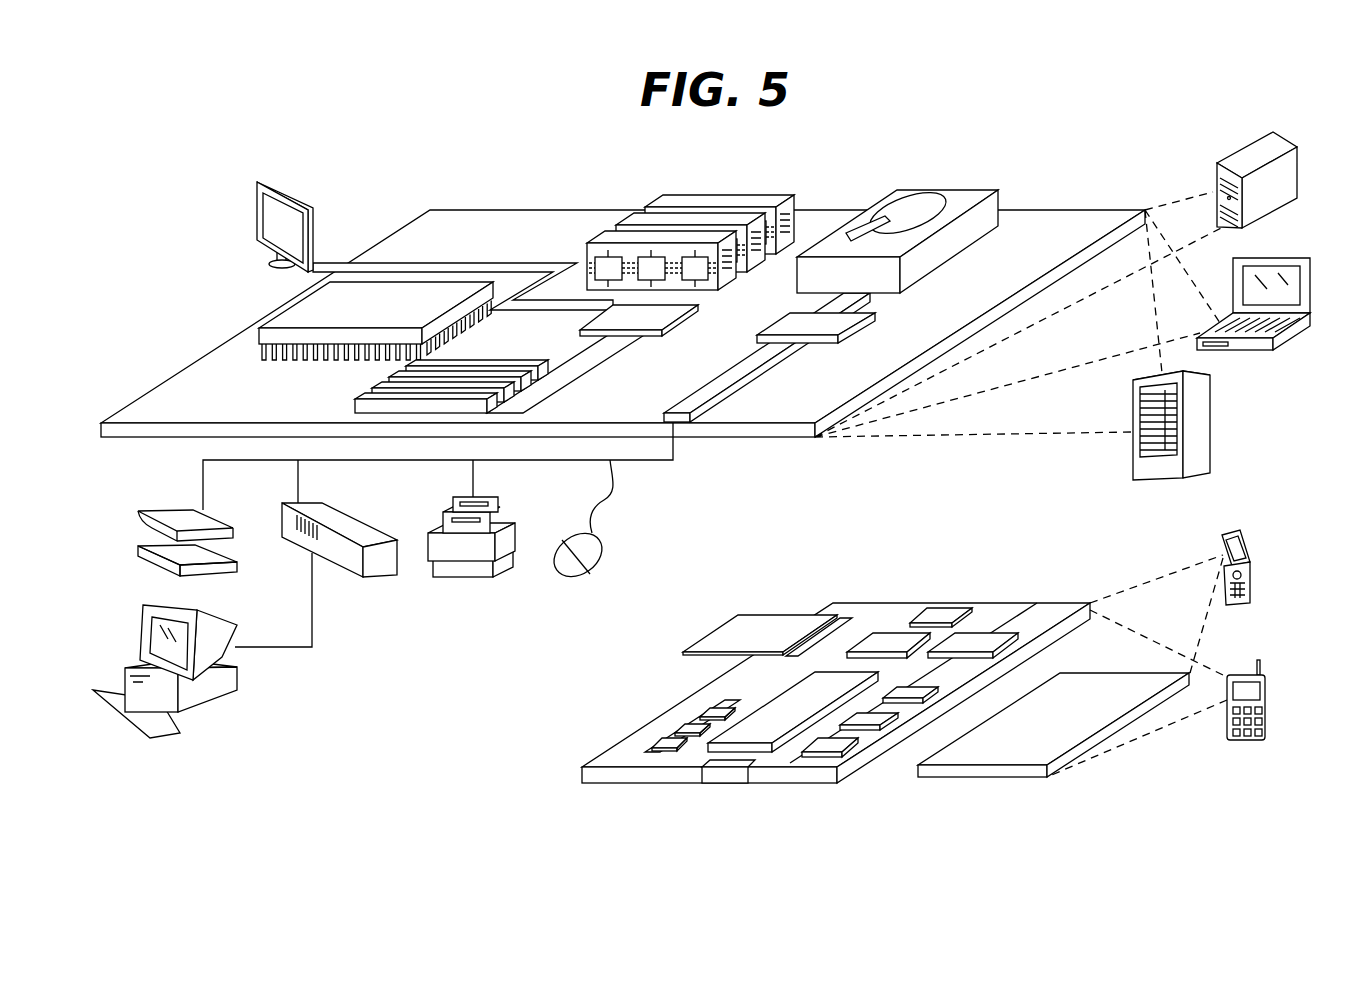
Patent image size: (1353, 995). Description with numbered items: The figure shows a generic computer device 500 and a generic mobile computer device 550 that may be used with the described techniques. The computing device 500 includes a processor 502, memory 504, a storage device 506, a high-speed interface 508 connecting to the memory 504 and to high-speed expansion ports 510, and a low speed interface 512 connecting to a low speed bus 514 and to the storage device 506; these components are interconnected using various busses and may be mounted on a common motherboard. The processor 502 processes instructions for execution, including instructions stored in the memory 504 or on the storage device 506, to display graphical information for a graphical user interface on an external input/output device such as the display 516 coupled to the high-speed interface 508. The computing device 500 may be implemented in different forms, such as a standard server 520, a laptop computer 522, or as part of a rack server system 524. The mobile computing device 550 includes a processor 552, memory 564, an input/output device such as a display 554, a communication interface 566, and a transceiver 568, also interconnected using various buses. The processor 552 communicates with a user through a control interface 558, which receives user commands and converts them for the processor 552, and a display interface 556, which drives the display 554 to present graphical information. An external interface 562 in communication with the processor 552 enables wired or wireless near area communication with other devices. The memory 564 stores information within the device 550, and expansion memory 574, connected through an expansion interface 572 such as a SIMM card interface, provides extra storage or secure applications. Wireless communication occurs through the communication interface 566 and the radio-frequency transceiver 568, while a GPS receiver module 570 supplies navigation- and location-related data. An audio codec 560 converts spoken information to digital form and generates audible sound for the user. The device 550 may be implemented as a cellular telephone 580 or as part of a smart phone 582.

The generic computer device 500 is at (382, 156).
The processor 502 is at (290, 313).
The memory 504 is at (718, 206).
The storage device 506 is at (944, 189).
The high-speed interface 508 is at (653, 325).
The high-speed expansion ports 510 is at (381, 390).
The low speed interface 512 is at (791, 320).
The low speed bus 514 is at (681, 409).
The display 516 is at (268, 180).
The standard server 520 is at (1236, 159).
The laptop computer 522 is at (1286, 257).
The rack server system 524 is at (1214, 425).
The generic mobile computer device 550 is at (538, 791).
The processor 552 is at (764, 723).
The display 554 is at (1095, 688).
The display interface 556 is at (845, 750).
The control interface 558 is at (880, 720).
The audio codec 560 is at (915, 688).
The external interface 562 is at (725, 770).
The memory 564 is at (680, 722).
The communication interface 566 is at (891, 632).
The transceiver 568 is at (980, 633).
The GPS receiver module 570 is at (945, 608).
The expansion interface 572 is at (821, 613).
The expansion memory 574 is at (740, 615).
The cellular telephone 580 is at (1233, 530).
The smart phone 582 is at (1240, 672).